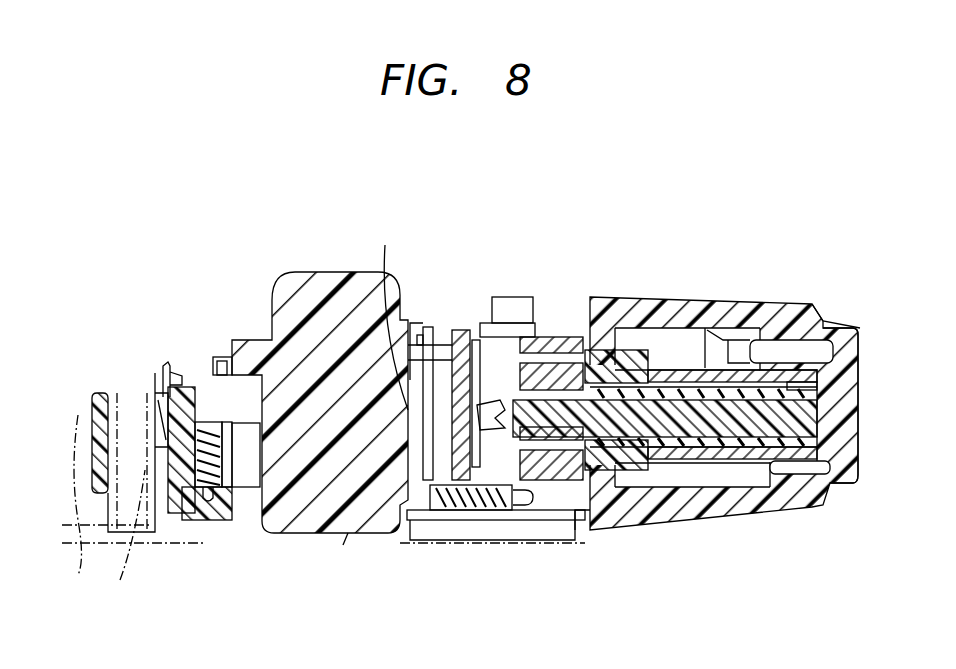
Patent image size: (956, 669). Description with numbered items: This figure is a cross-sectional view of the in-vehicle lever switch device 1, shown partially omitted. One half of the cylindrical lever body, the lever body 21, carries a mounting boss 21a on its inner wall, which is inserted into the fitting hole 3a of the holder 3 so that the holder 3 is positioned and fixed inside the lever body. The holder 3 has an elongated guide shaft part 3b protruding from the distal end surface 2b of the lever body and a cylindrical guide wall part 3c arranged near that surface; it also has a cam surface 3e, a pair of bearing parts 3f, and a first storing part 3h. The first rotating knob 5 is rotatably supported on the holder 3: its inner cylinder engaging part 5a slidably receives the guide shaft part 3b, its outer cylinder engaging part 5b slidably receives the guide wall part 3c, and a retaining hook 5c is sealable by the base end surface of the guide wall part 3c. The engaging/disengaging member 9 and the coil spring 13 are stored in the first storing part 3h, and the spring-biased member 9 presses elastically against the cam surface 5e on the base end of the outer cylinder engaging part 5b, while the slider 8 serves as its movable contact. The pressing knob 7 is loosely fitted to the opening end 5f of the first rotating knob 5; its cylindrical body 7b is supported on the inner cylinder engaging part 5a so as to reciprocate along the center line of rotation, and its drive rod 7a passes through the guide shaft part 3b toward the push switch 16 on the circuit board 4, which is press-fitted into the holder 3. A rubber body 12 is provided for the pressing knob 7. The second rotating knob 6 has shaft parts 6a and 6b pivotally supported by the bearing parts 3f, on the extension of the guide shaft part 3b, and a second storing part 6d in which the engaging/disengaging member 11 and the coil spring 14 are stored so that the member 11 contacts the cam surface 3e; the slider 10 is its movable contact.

The in-vehicle lever switch device 1 is at (243, 274).
The distal end surface 2b is at (582, 530).
The holder 3 is at (665, 417).
The fitting hole 3a is at (142, 397).
The guide shaft part 3b is at (627, 440).
The guide wall part 3c is at (577, 380).
The cam surface 3e is at (212, 490).
The bearing parts 3f is at (173, 412).
The first storing part 3h is at (450, 507).
The circuit board 4 is at (462, 345).
The first rotating knob 5 is at (682, 510).
The inner cylinder engaging part 5a is at (630, 380).
The outer cylinder engaging part 5b is at (528, 355).
The retaining hook 5c is at (550, 370).
The cam surface 5e is at (530, 507).
The opening end 5f is at (813, 324).
The second rotating knob 6 is at (330, 278).
The shaft part 6a is at (175, 410).
The shaft part 6b is at (390, 313).
The second storing part 6d is at (208, 390).
The pressing knob 7 is at (843, 447).
The drive rod 7a is at (733, 447).
The cylindrical body 7b is at (690, 370).
The slider 8 is at (486, 370).
The engaging/disengaging member 9 is at (518, 507).
The slider 10 is at (437, 350).
The engaging/disengaging member 11 is at (196, 490).
The rubber body 12 is at (738, 348).
The coil spring 13 is at (470, 507).
The coil spring 14 is at (218, 463).
The push switch 16 is at (412, 487).
The lever body 21 is at (88, 545).
The mounting boss 21a is at (122, 541).